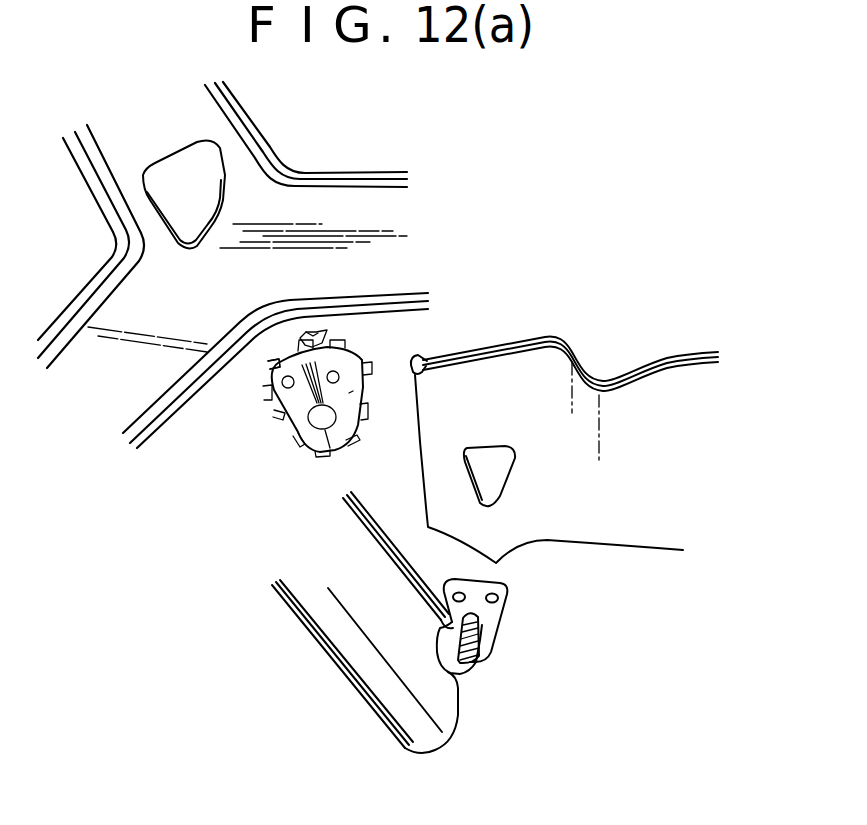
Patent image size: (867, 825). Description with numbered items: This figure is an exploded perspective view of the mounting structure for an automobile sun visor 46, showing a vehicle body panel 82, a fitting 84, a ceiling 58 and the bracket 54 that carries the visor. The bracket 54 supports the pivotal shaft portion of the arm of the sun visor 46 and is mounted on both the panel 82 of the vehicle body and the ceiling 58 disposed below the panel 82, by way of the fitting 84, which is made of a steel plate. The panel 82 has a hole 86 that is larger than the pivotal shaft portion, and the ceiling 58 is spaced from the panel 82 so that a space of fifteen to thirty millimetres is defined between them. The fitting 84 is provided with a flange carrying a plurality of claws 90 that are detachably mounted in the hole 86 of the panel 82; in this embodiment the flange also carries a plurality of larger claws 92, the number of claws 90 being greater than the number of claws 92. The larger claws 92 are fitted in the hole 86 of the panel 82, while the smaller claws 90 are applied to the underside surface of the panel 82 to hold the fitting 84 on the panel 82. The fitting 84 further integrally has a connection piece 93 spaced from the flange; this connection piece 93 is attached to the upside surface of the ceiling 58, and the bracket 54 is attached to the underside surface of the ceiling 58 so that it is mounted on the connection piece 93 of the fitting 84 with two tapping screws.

The sun visor 46 is at (342, 637).
The bracket 54 is at (493, 613).
The ceiling 58 is at (500, 370).
The panel 82 is at (262, 198).
The fitting 84 is at (288, 432).
The hole 86 is at (208, 165).
The claws 90 is at (268, 360).
The claws 92 is at (322, 333).
The connection piece 93 is at (352, 392).